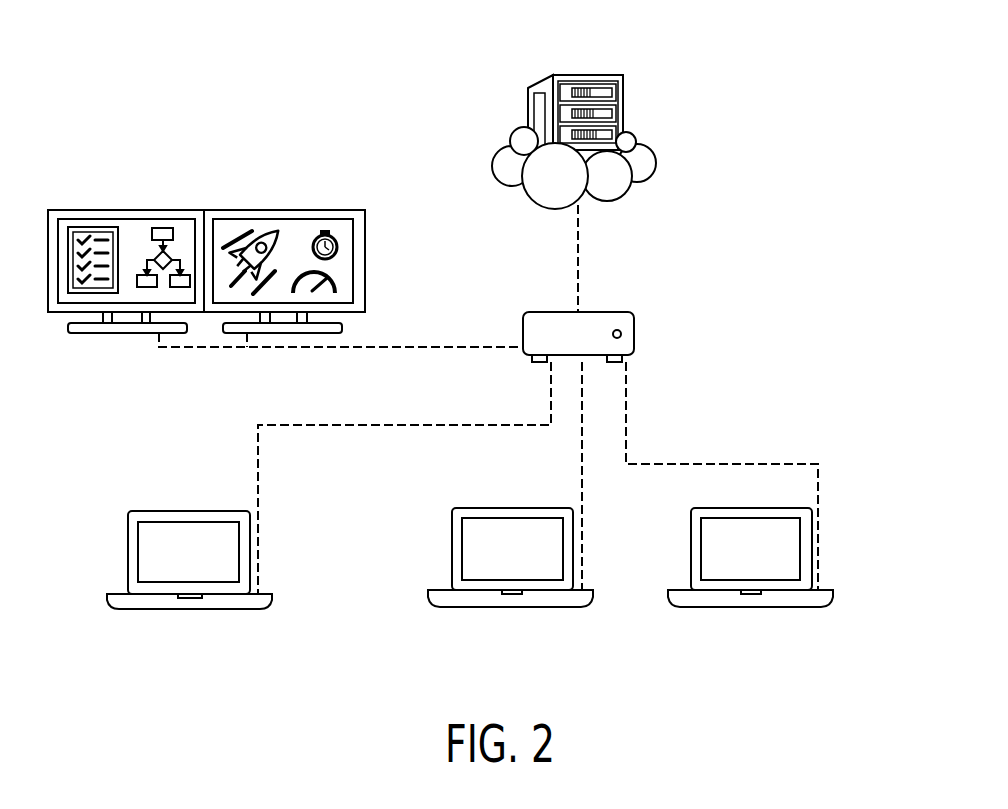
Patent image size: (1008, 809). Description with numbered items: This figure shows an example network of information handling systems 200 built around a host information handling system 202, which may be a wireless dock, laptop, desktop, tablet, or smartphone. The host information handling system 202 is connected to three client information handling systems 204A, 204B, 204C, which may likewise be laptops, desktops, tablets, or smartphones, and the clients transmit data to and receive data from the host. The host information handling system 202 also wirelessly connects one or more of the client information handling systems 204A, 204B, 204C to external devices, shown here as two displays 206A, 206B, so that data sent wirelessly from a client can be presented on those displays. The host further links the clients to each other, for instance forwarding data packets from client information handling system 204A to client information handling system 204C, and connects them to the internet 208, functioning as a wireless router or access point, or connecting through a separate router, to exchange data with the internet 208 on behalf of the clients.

The network of information handling systems 200 is at (806, 128).
The host information handling system 202 is at (634, 334).
The client information handling system 204A is at (795, 607).
The client information handling system 204B is at (557, 607).
The client information handling system 204C is at (272, 601).
The display 206A is at (285, 210).
The display 206B is at (131, 210).
The internet 208 is at (589, 75).